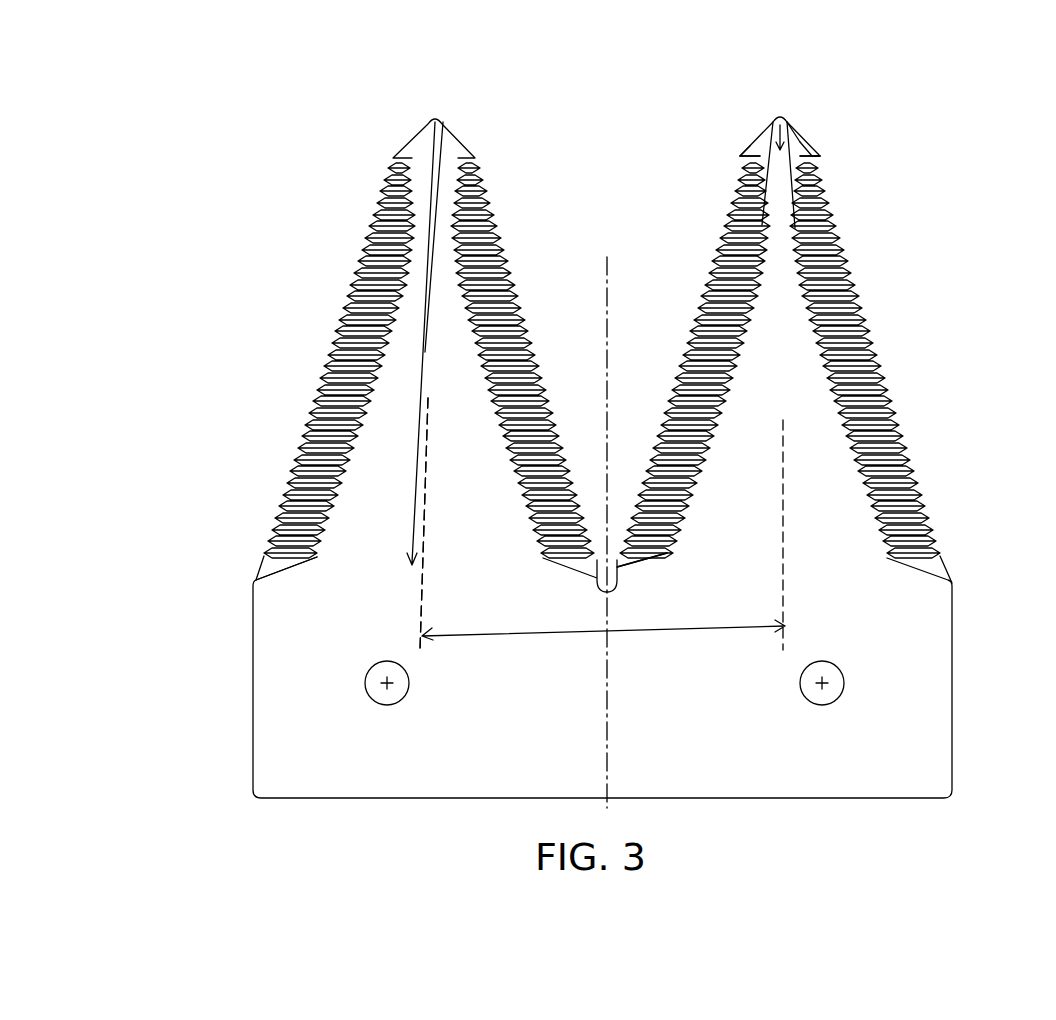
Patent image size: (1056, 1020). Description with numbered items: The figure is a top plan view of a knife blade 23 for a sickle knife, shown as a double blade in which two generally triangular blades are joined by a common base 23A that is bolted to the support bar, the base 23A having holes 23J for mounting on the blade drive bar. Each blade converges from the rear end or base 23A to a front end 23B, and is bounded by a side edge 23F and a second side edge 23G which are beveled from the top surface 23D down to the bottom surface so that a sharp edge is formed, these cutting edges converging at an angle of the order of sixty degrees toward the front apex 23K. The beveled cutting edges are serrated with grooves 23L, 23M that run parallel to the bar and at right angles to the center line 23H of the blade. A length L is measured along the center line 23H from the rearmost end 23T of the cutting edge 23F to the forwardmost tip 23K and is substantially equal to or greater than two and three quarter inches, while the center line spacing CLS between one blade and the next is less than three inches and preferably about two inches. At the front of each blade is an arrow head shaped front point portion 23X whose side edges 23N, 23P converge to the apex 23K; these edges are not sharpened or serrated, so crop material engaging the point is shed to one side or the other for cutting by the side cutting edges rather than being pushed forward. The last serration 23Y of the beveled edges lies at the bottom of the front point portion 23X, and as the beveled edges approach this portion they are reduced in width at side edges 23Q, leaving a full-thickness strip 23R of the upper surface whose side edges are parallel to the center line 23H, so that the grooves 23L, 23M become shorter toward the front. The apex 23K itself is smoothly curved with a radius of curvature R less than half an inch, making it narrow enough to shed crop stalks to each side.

The knife blade 23 is at (541, 273).
The base 23A is at (933, 687).
The front end 23B is at (490, 139).
The front apex 23K is at (437, 112).
The top surface 23D is at (375, 408).
The center line 23H is at (427, 500).
The rearmost end of the cutting edge 23T is at (236, 564).
The length L is at (422, 434).
The holes 23J is at (402, 683).
The center line spacing CLS is at (627, 636).
The groove 23M is at (778, 118).
The radius of curvature R is at (785, 118).
The front point portion 23X is at (800, 142).
The side edge of front point portion 23P is at (798, 157).
The last serration 23Y is at (797, 170).
The strip 23R is at (817, 160).
The side edge of front point portion 23N is at (746, 160).
The side edges of the strip 23Q is at (747, 150).
The side edge 23F is at (683, 358).
The groove 23L is at (683, 508).
The second side edge 23G is at (885, 390).